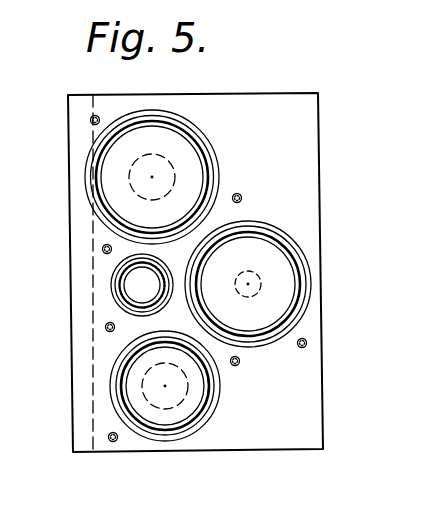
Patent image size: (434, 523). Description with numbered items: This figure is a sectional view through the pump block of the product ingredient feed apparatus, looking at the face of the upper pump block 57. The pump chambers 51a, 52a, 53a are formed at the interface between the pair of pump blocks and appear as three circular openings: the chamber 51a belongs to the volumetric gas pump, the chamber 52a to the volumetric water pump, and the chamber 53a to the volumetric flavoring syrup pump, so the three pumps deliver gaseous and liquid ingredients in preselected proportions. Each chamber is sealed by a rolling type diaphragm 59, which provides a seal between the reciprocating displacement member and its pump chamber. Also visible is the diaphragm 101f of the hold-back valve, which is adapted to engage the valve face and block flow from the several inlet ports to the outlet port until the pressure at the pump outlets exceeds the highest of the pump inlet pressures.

The pumping chamber 51a is at (183, 122).
The pumping chamber 52a is at (212, 416).
The pumping chamber 53a is at (110, 293).
The upper pump block 57 is at (323, 432).
The rolling type diaphragm 59 is at (113, 180).
The diaphragm 101f is at (295, 242).